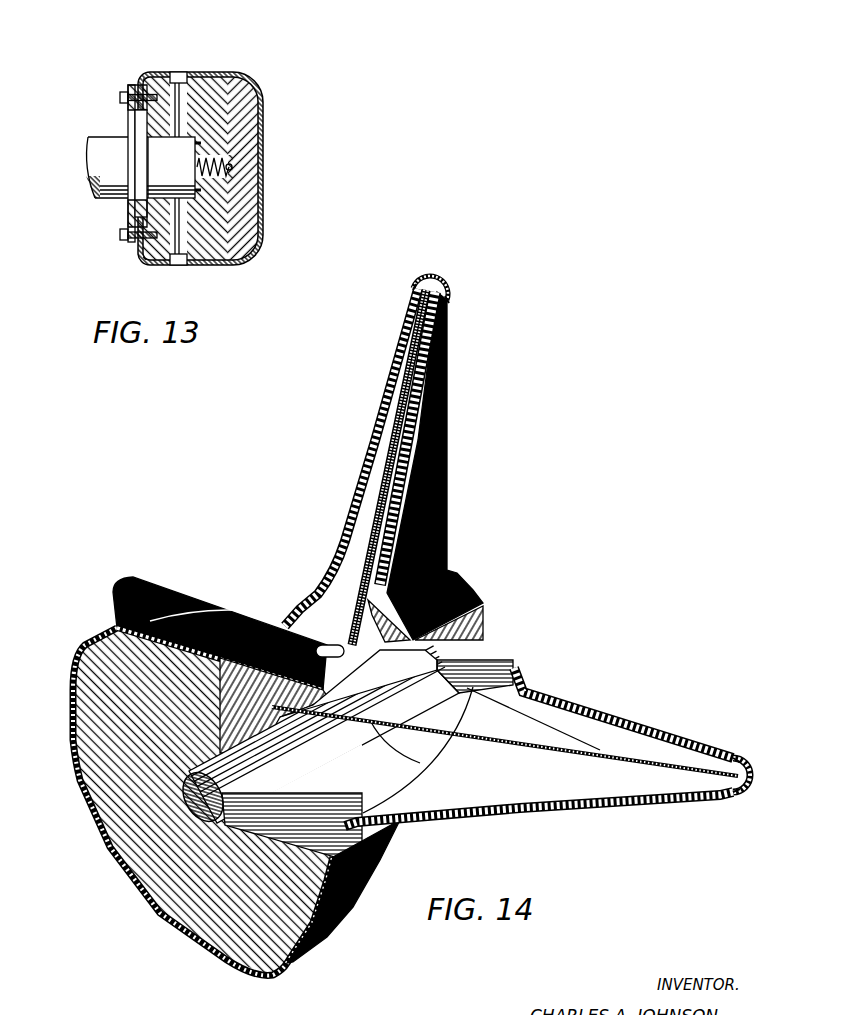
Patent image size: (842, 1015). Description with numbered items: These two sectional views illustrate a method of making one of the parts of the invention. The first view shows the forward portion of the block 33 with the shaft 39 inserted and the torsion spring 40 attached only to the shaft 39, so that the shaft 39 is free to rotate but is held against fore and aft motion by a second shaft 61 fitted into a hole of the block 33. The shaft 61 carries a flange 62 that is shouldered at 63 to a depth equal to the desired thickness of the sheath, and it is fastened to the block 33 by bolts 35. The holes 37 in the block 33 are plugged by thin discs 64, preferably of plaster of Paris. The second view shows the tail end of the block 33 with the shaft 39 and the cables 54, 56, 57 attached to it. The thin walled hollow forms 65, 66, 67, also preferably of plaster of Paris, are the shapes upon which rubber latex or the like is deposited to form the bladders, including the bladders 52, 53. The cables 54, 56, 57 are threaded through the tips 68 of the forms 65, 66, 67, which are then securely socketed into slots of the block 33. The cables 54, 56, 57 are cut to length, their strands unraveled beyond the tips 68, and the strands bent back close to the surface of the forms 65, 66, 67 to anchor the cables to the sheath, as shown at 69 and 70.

In FIG. 13, the block 33 is at (262, 163).
In FIG. 13, the bolts 35 is at (122, 96).
In FIG. 13, the holes 37 is at (180, 100).
In FIG. 13, the shaft 39 is at (231, 169).
In FIG. 14, the shaft 39 is at (188, 812).
In FIG. 13, the torsion spring 40 is at (260, 130).
In FIG. 14, the bladder 52 is at (114, 590).
In FIG. 14, the bladder 53 is at (640, 727).
In FIG. 14, the cable 54 is at (393, 497).
In FIG. 14, the cable 56 is at (287, 710).
In FIG. 14, the cable 57 is at (505, 725).
In FIG. 13, the shaft 61 is at (100, 166).
In FIG. 13, the flange 62 is at (130, 212).
In FIG. 13, the shoulder 63 is at (133, 130).
In FIG. 13, the thin discs 64 is at (177, 73).
In FIG. 14, the thin walled hollow form 65 is at (395, 383).
In FIG. 14, the thin walled hollow form 66 is at (300, 627).
In FIG. 14, the thin walled hollow form 67 is at (537, 780).
In FIG. 14, the tips 68 is at (436, 282).
In FIG. 14, the bent-back strands 69 is at (421, 284).
In FIG. 14, the bent-back strands 70 is at (742, 757).